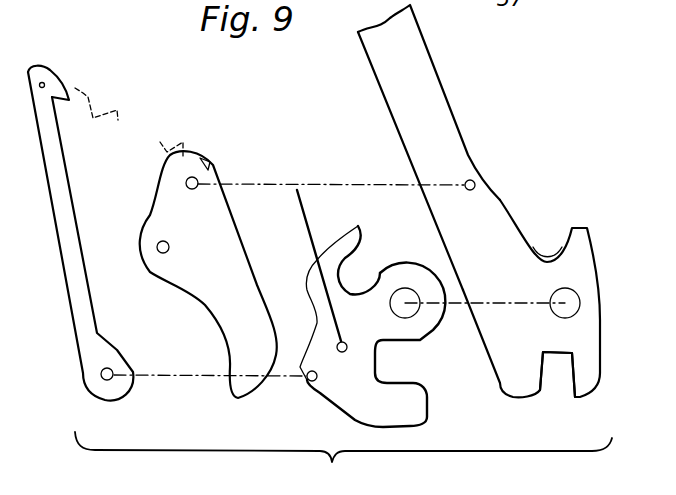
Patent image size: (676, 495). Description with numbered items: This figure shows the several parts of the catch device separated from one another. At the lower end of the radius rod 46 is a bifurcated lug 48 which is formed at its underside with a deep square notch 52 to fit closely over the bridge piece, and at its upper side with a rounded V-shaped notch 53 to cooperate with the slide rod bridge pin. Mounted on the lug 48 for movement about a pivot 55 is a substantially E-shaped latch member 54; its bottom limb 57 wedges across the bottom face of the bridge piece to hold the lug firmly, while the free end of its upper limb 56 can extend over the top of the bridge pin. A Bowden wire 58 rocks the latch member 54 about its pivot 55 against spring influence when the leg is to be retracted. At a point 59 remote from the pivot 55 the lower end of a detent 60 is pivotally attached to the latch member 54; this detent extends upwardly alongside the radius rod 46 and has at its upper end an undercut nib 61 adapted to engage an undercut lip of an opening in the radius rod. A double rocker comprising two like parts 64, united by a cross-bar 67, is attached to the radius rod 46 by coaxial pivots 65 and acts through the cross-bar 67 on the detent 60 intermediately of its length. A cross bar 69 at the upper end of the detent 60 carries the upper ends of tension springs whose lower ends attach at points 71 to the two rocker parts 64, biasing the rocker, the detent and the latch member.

The radius rod 46 is at (415, 65).
The lug 48 is at (587, 268).
The square notch 52 is at (552, 358).
The V-shaped notch 53 is at (541, 250).
The latch member 54 is at (423, 323).
The pivot 55 is at (573, 312).
The upper limb 56 is at (350, 229).
The bottom limb 57 is at (407, 397).
The Bowden wire 58 is at (305, 199).
The point 59 is at (310, 380).
The detent 60 is at (70, 213).
The undercut nib 61 is at (58, 86).
The rocker parts 64 is at (222, 243).
The coaxial pivots 65 is at (473, 182).
The cross-bar 67 is at (158, 253).
The cross bar 69 is at (42, 85).
The spring attachment points 71 is at (210, 163).